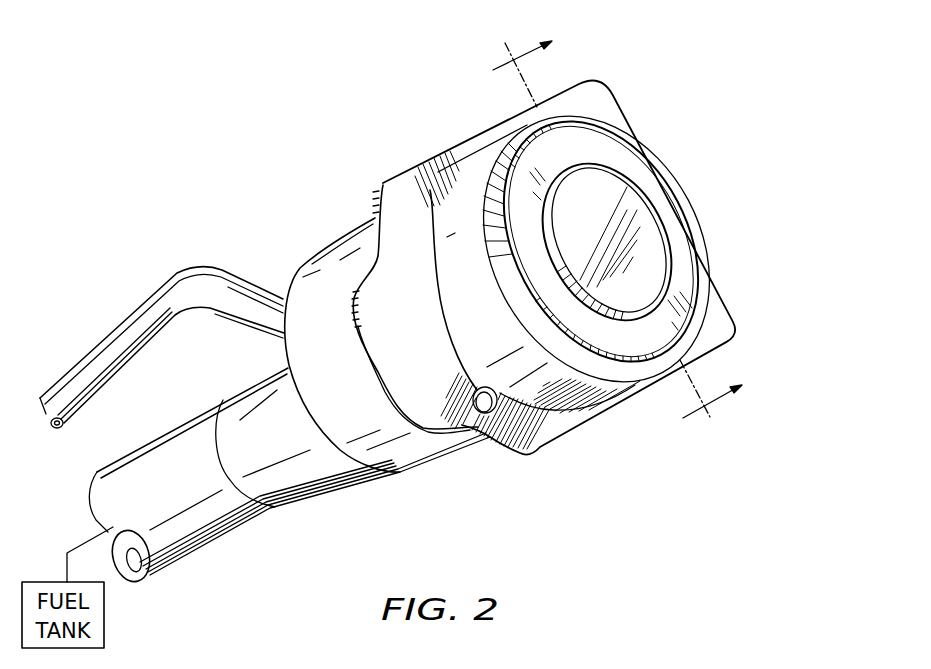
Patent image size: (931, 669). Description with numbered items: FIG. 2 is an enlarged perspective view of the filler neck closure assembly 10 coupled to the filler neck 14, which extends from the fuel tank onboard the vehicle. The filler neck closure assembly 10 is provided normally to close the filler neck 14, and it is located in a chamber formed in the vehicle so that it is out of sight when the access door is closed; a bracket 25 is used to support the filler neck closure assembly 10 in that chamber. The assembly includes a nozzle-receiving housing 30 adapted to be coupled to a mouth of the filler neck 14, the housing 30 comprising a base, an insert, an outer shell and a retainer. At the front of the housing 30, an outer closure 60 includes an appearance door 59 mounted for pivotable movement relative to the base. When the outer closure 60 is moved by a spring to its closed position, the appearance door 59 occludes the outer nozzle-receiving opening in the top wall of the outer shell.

The filler neck closure assembly 10 is at (447, 306).
The filler neck 14 is at (277, 264).
The bracket 25 is at (521, 433).
The nozzle-receiving housing 30 is at (478, 162).
The appearance door 59 is at (655, 250).
The outer closure 60 is at (605, 192).